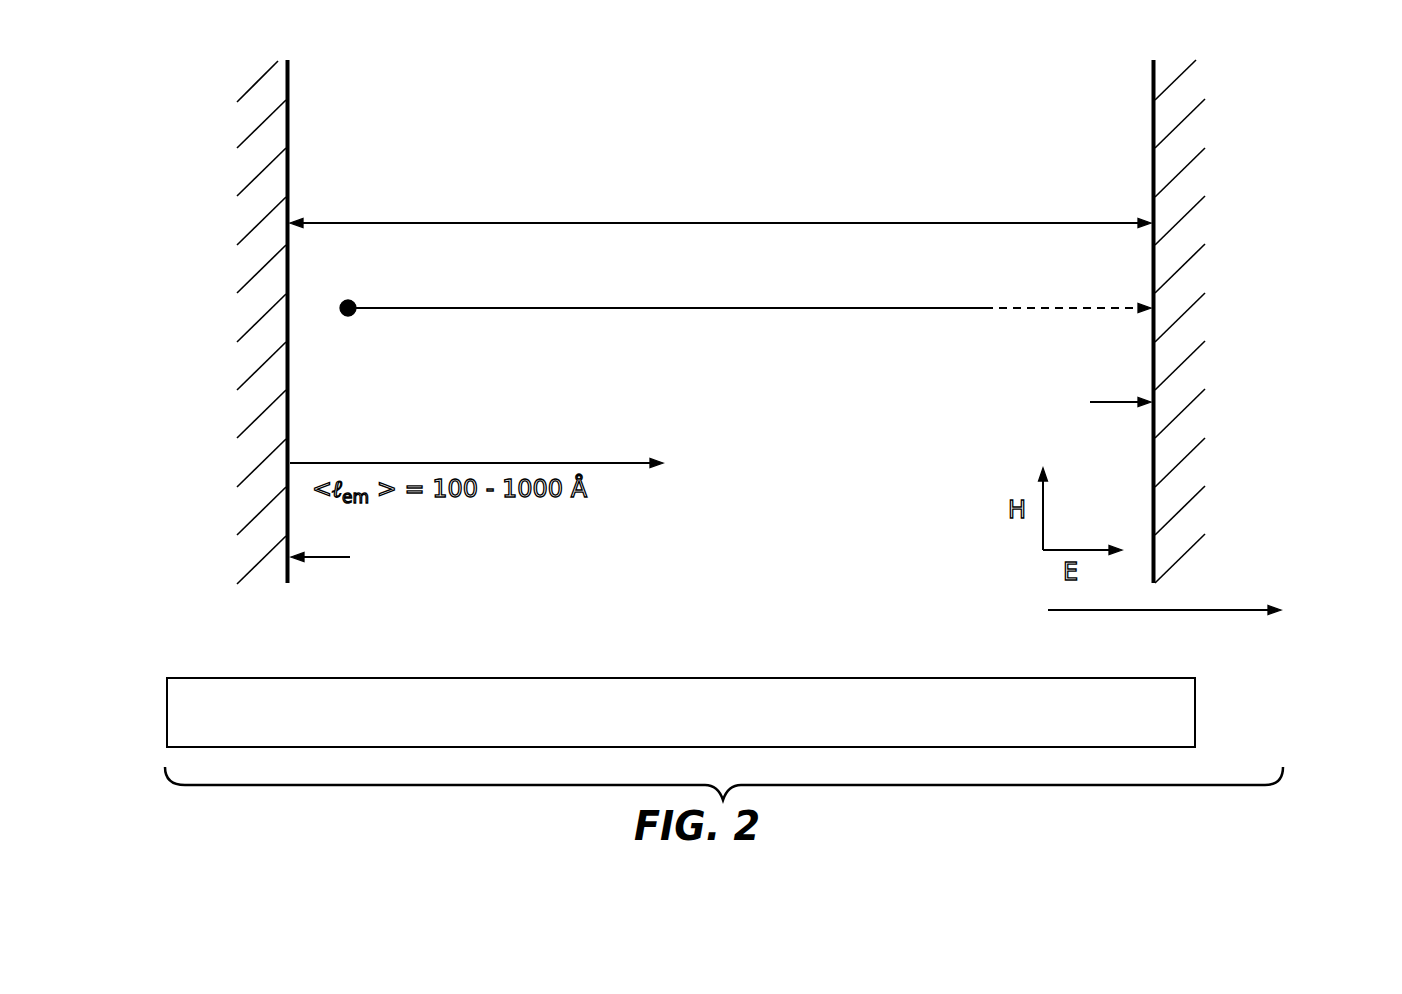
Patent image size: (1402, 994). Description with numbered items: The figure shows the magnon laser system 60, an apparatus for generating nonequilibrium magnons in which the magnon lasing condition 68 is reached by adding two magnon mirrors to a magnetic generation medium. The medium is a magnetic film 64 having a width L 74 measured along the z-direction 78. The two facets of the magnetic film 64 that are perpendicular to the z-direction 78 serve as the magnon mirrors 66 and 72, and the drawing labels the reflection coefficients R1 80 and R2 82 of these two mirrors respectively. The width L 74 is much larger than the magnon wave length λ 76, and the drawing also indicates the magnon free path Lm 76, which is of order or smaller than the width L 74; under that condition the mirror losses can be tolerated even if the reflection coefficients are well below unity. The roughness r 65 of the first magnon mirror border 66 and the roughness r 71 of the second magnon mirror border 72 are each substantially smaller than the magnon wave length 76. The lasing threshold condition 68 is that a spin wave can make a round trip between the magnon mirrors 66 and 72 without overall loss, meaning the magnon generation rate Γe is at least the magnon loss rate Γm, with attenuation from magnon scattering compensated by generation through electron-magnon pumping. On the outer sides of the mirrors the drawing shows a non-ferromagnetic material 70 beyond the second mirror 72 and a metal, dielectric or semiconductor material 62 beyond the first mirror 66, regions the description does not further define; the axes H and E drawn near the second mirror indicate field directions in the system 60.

The magnon laser system 60 is at (134, 604).
The metal/dielectric/semiconductor layer 62 is at (250, 320).
The magnetic film 64 is at (684, 108).
The roughness of magnon mirror border 65 is at (298, 128).
The magnon mirror 66 is at (290, 72).
The magnon lasing condition 68 is at (960, 678).
The non-ferromagnetic material 70 is at (1195, 143).
The roughness of magnon mirror border 71 is at (1140, 180).
The magnon mirror 72 is at (1150, 100).
The width L 74 is at (780, 206).
The magnon wave length 76 is at (320, 290).
The z-direction 78 is at (1222, 612).
The reflection coefficient R1 80 is at (323, 560).
The reflection coefficient R2 82 is at (1140, 412).